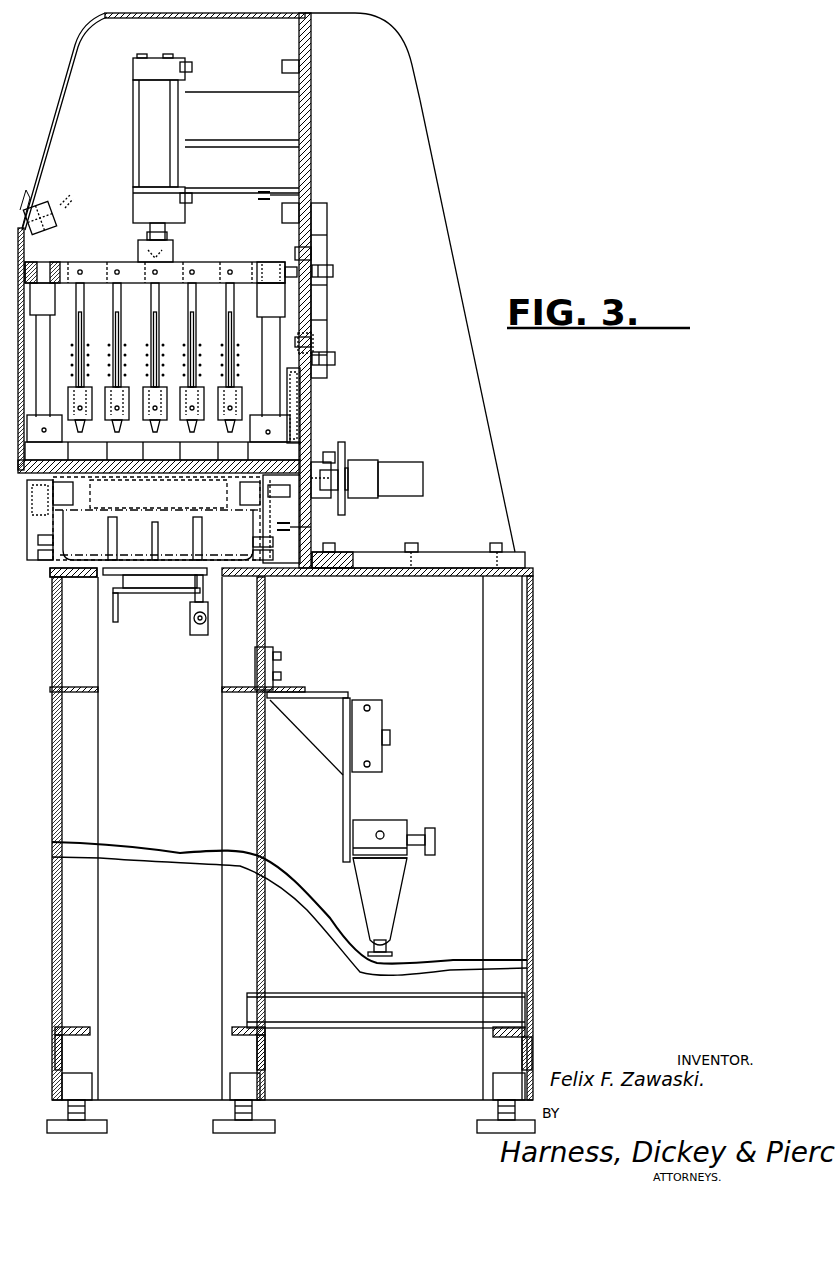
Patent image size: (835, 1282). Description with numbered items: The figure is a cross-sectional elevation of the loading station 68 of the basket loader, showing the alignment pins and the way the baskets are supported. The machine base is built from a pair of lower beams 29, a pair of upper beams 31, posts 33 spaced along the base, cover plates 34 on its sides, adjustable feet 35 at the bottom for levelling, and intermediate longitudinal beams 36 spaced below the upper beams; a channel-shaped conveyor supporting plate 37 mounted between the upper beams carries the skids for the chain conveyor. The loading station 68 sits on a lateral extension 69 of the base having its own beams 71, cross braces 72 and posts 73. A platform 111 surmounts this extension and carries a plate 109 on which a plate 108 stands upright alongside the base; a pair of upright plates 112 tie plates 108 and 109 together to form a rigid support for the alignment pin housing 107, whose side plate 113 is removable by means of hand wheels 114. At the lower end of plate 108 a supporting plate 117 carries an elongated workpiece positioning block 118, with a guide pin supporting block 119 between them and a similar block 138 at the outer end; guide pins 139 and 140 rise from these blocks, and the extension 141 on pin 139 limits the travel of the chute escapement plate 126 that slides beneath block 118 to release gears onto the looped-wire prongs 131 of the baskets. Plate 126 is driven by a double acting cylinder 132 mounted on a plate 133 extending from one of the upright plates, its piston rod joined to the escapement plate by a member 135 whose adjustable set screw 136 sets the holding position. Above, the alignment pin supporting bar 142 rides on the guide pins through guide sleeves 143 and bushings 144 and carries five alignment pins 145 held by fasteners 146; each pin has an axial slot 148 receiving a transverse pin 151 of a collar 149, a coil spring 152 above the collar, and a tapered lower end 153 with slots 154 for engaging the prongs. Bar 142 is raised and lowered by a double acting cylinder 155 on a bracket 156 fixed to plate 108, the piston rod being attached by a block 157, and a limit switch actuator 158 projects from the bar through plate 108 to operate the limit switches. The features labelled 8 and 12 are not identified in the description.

The electrical lead 8 is at (282, 194).
The switch 12 is at (38, 202).
The lower beams 29 is at (80, 1040).
The upper beams 31 is at (95, 590).
The posts 33 is at (80, 766).
The cover plates 34 is at (62, 748).
The adjustable feet 35 is at (105, 1133).
The intermediate longitudinal beams 36 is at (78, 695).
The conveyor supporting plate 37 is at (140, 600).
The loading station 68 is at (452, 183).
The lateral extension of base 69 is at (535, 840).
The beams 71 is at (505, 1040).
The cross braces 72 is at (370, 1030).
The posts 73 is at (506, 633).
The alignment pin housing 107 is at (68, 72).
The plate 108 is at (308, 112).
The plate 109 is at (512, 560).
The platform 111 is at (290, 580).
The upright plates 112 is at (442, 282).
The side plate 113 is at (108, 117).
The hand wheels 114 is at (62, 183).
The supporting plate 117 is at (300, 392).
The workpiece positioning block 118 is at (295, 452).
The guide pin supporting block 119 is at (262, 410).
The chute escapement plate 126 is at (160, 510).
The prongs 131 is at (97, 500).
The double acting cylinder 132 is at (400, 478).
The plate 133 is at (335, 358).
The member 135 is at (327, 245).
The adjustable set screw 136 is at (345, 460).
The guide pin supporting block 138 is at (55, 412).
The guide pin 139 is at (42, 348).
The guide pin 140 is at (275, 330).
The extension 141 is at (32, 515).
The alignment pin supporting bar 142 is at (245, 262).
The guide sleeves 143 is at (60, 290).
The bushings 144 is at (40, 255).
The alignment pins 145 is at (80, 320).
The fasteners 146 is at (196, 268).
The axial slots 148 is at (84, 345).
The collars 149 is at (205, 400).
The transverse pins 151 is at (82, 430).
The coil spring 152 is at (156, 335).
The lower ends 153 is at (162, 426).
The slots 154 is at (240, 435).
The double acting cylinder 155 is at (160, 97).
The bracket 156 is at (278, 107).
The block 157 is at (175, 245).
The limit switch actuator 158 is at (333, 270).